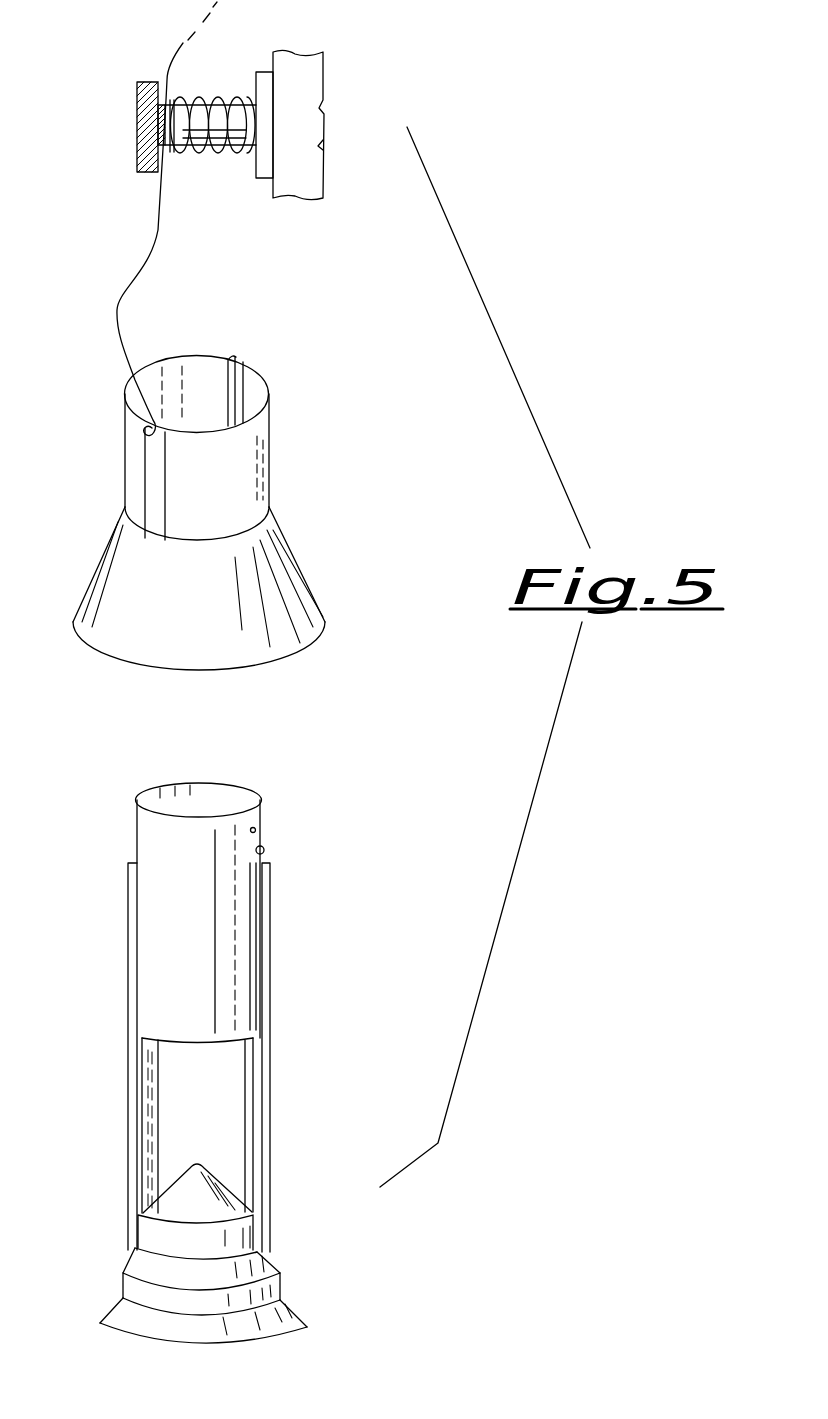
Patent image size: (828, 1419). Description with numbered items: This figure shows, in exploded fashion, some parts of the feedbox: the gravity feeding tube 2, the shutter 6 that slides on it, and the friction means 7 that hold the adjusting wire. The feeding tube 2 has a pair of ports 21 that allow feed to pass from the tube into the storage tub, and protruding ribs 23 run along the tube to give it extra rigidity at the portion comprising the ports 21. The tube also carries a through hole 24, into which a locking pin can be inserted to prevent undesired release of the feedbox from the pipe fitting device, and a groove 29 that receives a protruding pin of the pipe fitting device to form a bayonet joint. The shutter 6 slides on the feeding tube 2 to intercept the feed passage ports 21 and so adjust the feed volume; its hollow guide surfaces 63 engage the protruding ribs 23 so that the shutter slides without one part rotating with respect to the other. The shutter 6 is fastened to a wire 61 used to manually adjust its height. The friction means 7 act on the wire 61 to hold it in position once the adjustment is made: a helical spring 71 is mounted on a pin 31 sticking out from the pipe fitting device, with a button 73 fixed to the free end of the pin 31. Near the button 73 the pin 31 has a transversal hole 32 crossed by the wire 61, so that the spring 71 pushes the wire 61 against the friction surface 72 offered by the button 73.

The gravity feeding tube 2 is at (298, 998).
The ports 21 is at (176, 1115).
The protruding ribs 23 is at (130, 930).
The through hole 24 is at (258, 827).
The groove 29 is at (267, 848).
The shutter 6 is at (310, 450).
The wire 61 is at (117, 309).
The hollow guide surfaces 63 is at (243, 383).
The friction means 7 is at (342, 120).
The helical spring 71 is at (208, 99).
The friction surface 72 is at (158, 174).
The button 73 is at (137, 93).
The pin 31 is at (247, 122).
The transversal hole 32 is at (177, 140).